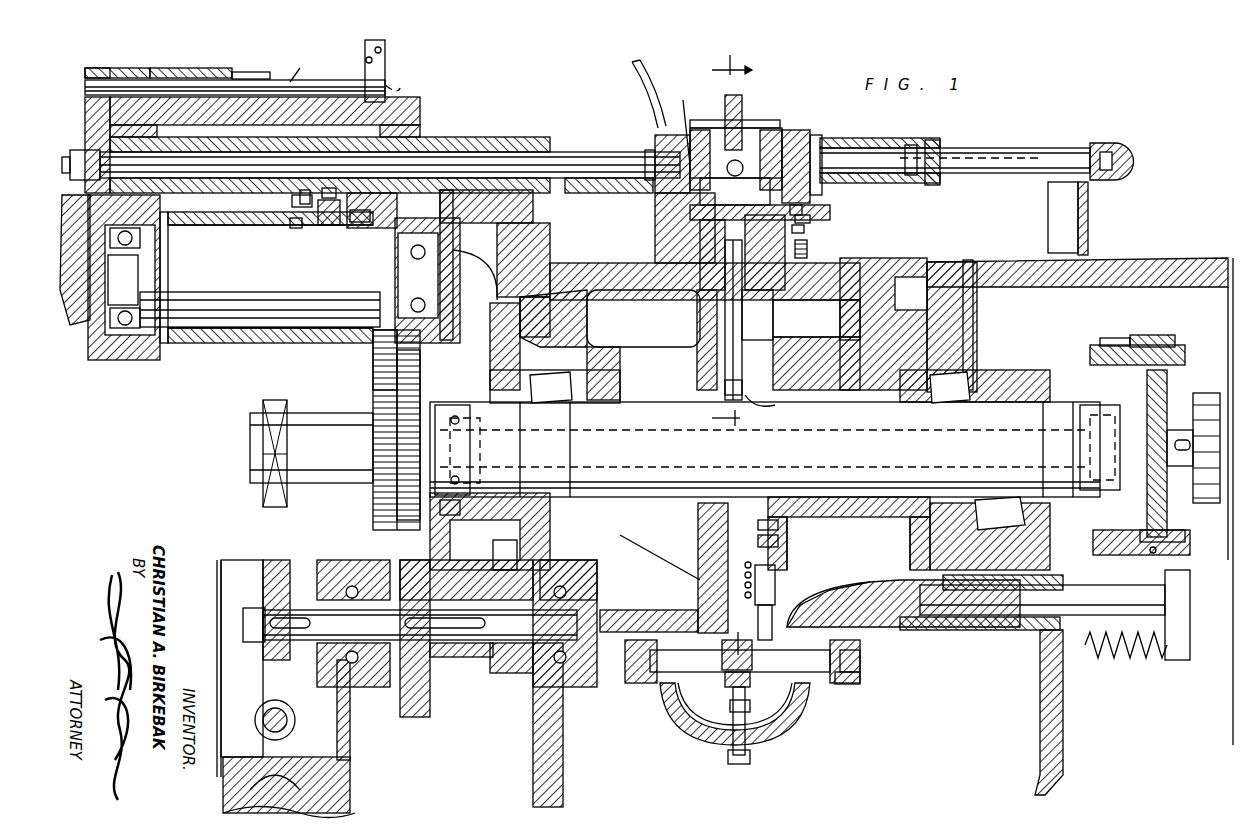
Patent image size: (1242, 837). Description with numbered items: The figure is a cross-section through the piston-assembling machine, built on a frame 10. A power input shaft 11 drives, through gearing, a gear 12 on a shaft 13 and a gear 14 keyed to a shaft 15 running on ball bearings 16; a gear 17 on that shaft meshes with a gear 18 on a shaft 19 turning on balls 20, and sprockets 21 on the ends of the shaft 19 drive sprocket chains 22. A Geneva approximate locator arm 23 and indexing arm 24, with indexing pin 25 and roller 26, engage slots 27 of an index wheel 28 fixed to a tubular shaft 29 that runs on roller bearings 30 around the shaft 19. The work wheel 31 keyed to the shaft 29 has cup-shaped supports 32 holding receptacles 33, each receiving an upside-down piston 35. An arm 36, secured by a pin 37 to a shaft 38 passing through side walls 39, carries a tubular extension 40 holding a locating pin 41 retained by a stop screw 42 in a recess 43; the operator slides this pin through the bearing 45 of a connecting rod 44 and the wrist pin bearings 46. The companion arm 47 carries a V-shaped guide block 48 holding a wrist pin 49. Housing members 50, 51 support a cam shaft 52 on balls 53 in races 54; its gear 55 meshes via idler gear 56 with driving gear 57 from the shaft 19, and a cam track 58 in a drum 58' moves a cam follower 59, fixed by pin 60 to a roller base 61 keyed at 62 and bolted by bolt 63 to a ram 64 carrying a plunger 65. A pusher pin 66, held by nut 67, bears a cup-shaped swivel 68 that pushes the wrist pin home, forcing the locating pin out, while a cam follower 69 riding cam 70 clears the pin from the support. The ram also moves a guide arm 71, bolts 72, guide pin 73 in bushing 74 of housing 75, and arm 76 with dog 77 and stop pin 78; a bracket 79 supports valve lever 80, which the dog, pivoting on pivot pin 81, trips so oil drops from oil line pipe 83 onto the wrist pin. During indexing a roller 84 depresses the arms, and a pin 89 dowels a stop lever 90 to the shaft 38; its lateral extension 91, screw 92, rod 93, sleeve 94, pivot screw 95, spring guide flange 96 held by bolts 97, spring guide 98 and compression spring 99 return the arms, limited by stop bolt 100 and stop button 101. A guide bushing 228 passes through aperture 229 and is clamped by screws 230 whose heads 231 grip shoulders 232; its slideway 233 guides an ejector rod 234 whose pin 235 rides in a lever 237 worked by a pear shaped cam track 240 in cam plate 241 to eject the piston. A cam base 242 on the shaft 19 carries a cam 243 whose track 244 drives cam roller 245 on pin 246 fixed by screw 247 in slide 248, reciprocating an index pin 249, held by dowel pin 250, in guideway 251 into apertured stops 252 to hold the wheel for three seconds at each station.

The frame 10 is at (75, 320).
The power input shaft 11 is at (320, 816).
The gear 12 is at (290, 708).
The shaft 13 is at (262, 712).
The gear 14 is at (265, 570).
The shaft 15 is at (410, 625).
The ball bearings 16 is at (355, 665).
The gear 17 is at (430, 680).
The gear 18 is at (385, 520).
The shaft 19 is at (880, 465).
The balls 20 is at (478, 420).
The sprockets 21 is at (262, 414).
The sprocket chains 22 is at (275, 400).
The Geneva approximate locator arm 23 is at (510, 673).
The indexing arm 24 is at (465, 565).
The indexing pin 25 is at (445, 511).
The roller 26 is at (505, 555).
The slots 27 is at (505, 566).
The index wheel 28 is at (492, 355).
The tubular shaft 29 is at (445, 405).
The roller bearings 30 is at (560, 403).
The work wheel 31 is at (880, 262).
The cup-shaped supports 32 is at (820, 210).
The work holding receptacles 33 is at (796, 130).
The piston 35 is at (700, 125).
The arm 36 is at (860, 645).
The pin 37 is at (850, 683).
The shaft 38 is at (860, 665).
The side walls 39 is at (672, 718).
The tubular extension 40 is at (860, 138).
The locating pin 41 is at (1018, 148).
The stop screw 42 is at (911, 145).
The recess 43 is at (960, 155).
The connecting rod 44 is at (742, 110).
The bearing 45 is at (735, 191).
The wrist pin bearings 46 is at (815, 140).
The arm 47 is at (625, 650).
The V-shaped guide block 48 is at (630, 193).
The wrist pin 49 is at (736, 153).
The housing member 50 is at (135, 360).
The housing member 51 is at (455, 275).
The cam shaft 52 is at (123, 280).
The balls 53 is at (135, 315).
The races 54 is at (135, 240).
The gear 55 is at (372, 316).
The idler gear 56 is at (375, 368).
The driving gear 57 is at (373, 402).
The cam track 58 is at (266, 290).
The drum 58' is at (270, 276).
The cam follower 59 is at (355, 227).
The pin 60 is at (320, 222).
The roller base 61 is at (292, 200).
The key 62 is at (330, 188).
The bolt 63 is at (305, 190).
The ram 64 is at (480, 137).
The plunger 65 is at (570, 152).
The pusher pin 66 is at (658, 140).
The nut 67 is at (648, 152).
The cup-shaped swivel 68 is at (677, 123).
The cam follower 69 is at (1070, 185).
The cam 70 is at (1090, 200).
The guide arm 71 is at (95, 68).
The bolts 72 is at (85, 150).
The guide pin 73 is at (318, 80).
The bushing 74 is at (190, 68).
The housing 75 is at (150, 68).
The arm 76 is at (385, 97).
The dog 77 is at (401, 78).
The stop pin 78 is at (366, 60).
The bracket 79 is at (250, 72).
The valve lever 80 is at (300, 68).
The pivot pin 81 is at (382, 50).
The oil line pipe 83 is at (644, 84).
The roller 84 is at (935, 140).
The pin 89 is at (739, 634).
The stop lever 90 is at (725, 680).
The lateral extension 91 is at (775, 735).
The screw 92 is at (770, 663).
The rod 93 is at (772, 620).
The sleeve 94 is at (775, 590).
The pivot screw 95 is at (778, 545).
The spring guide flange 96 is at (778, 528).
The bolts 97 is at (800, 335).
The spring guide 98 is at (722, 660).
The compression spring 99 is at (778, 570).
The stop bolt 100 is at (740, 764).
The stop button 101 is at (730, 706).
The guide bushing 228 is at (725, 300).
The aperture 229 is at (812, 220).
The screws 230 is at (805, 230).
The heads 231 is at (802, 210).
The shoulders 232 is at (808, 250).
The slideway 233 is at (760, 325).
The ejector rod 234 is at (730, 310).
The pin 235 is at (725, 378).
The lever 237 is at (776, 409).
The pear shaped cam track 240 is at (697, 340).
The cam plate 241 is at (706, 585).
The cam base 242 is at (1092, 350).
The cam 243 is at (1160, 335).
The track 244 is at (1122, 338).
The cam roller 245 is at (1185, 545).
The pin 246 is at (1180, 585).
The screw 247 is at (1160, 566).
The slide 248 is at (1150, 655).
The index pin 249 is at (1042, 600).
The dowel pin 250 is at (1110, 555).
The guideway 251 is at (1008, 630).
The apertured stops 252 is at (925, 630).